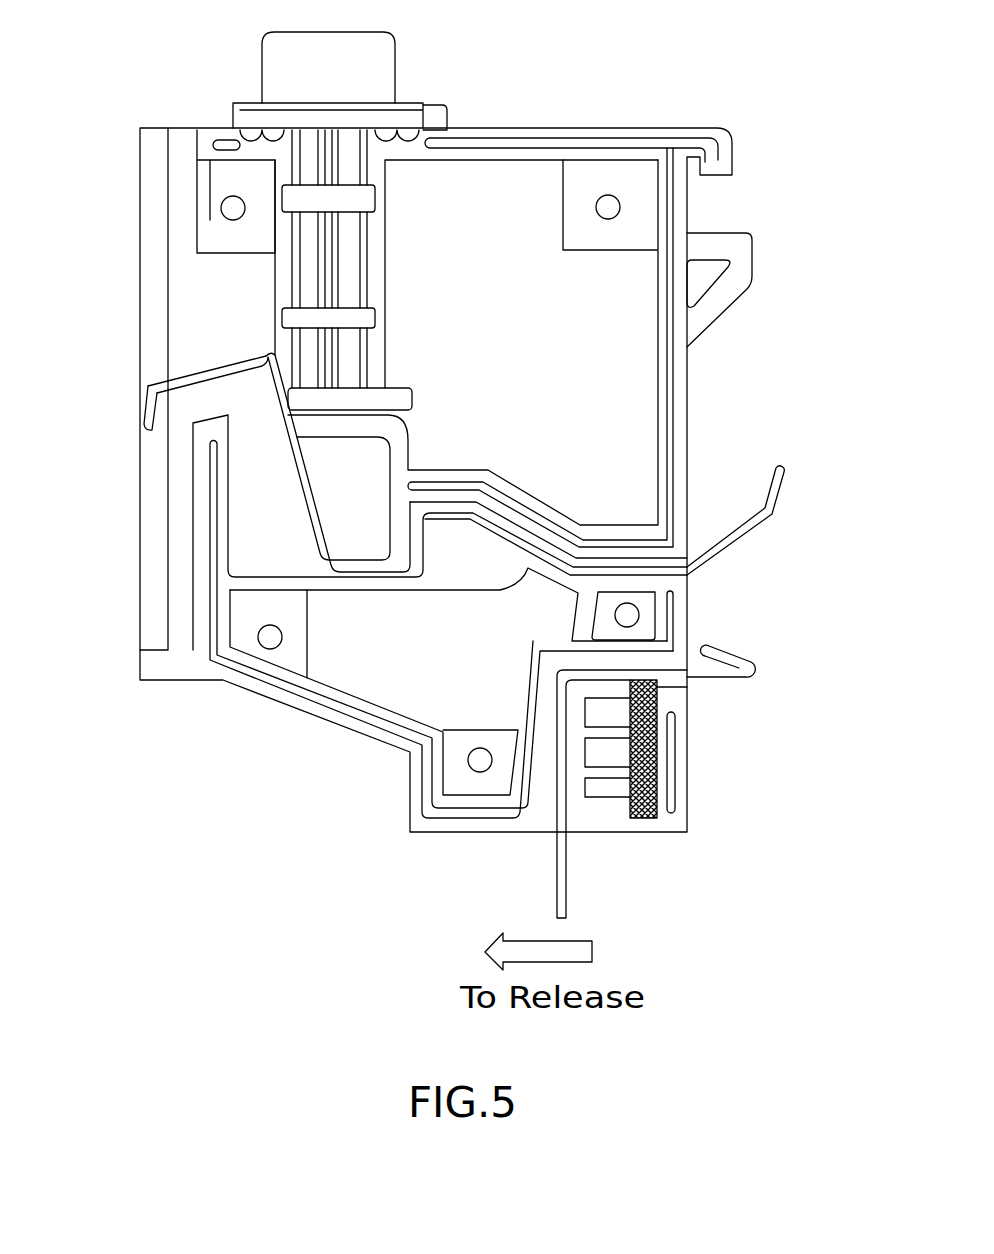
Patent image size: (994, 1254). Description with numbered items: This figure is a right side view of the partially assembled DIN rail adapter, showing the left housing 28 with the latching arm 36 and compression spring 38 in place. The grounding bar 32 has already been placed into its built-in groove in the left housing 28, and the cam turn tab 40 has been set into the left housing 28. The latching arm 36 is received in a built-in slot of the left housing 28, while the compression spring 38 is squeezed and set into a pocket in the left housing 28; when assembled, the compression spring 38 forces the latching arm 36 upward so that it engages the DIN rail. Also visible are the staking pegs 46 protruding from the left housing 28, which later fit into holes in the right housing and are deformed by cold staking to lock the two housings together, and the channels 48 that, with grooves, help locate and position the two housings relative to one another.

The left housing 28 is at (186, 683).
The grounding bar 32 is at (783, 492).
The latching arm 36 is at (555, 858).
The compression spring 38 is at (638, 818).
The cam turn tab 40 is at (290, 57).
The staking pegs 46 is at (226, 208).
The channels 48 is at (517, 145).